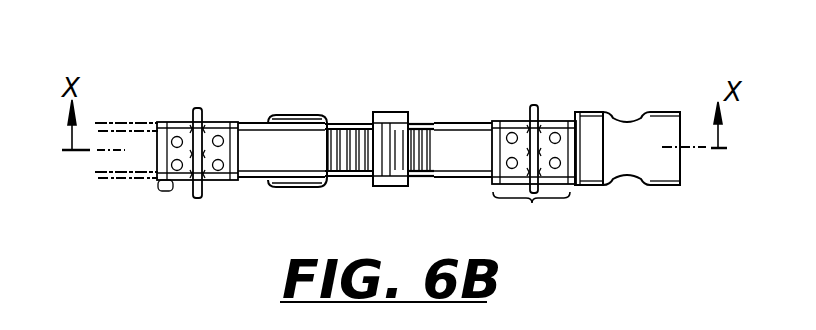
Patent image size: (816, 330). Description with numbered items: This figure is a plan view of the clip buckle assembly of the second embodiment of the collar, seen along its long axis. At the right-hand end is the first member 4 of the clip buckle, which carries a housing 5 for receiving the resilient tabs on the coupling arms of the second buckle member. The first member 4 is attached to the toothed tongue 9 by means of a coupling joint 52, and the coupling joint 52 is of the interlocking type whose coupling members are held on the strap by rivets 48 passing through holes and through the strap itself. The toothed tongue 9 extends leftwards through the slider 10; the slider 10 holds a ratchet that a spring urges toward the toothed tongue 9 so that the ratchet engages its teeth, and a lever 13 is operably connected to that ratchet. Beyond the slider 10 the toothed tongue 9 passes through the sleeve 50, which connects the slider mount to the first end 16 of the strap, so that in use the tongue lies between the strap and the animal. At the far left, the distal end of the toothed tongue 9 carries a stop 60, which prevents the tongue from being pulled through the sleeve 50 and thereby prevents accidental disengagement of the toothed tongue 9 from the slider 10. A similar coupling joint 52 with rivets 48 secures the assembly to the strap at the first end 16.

The stop 60 is at (166, 120).
The rivets 48 is at (223, 136).
The first end of strap 16 is at (260, 168).
The sleeve 50 is at (302, 116).
The toothed tongue 9 is at (348, 177).
The slider 10 is at (399, 114).
The lever 13 is at (397, 175).
The coupling joint 52 is at (532, 200).
The first member 4 is at (594, 120).
The housing 5 is at (633, 117).